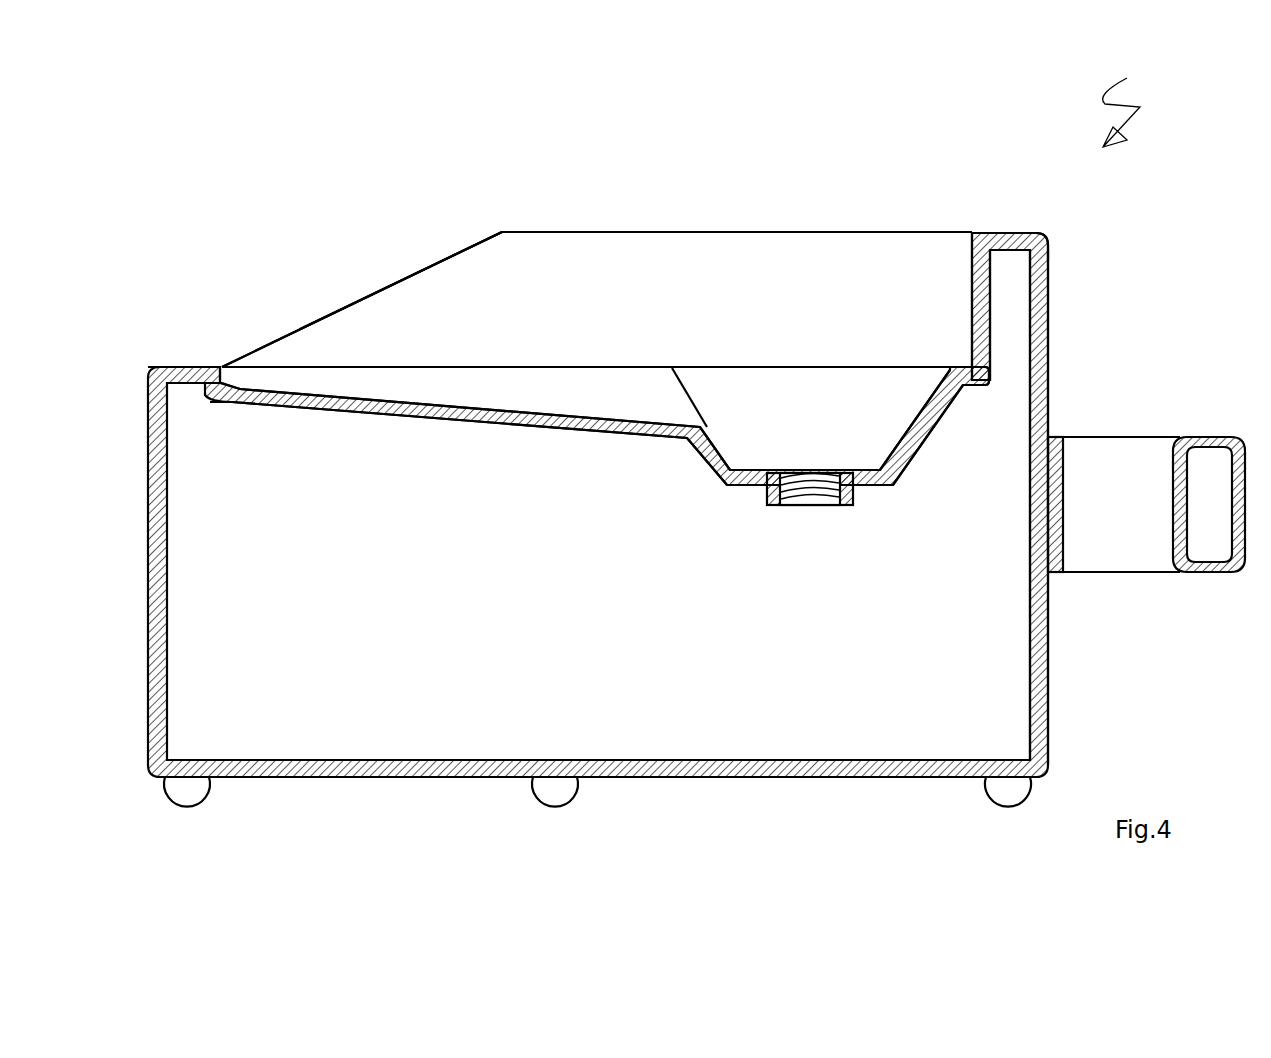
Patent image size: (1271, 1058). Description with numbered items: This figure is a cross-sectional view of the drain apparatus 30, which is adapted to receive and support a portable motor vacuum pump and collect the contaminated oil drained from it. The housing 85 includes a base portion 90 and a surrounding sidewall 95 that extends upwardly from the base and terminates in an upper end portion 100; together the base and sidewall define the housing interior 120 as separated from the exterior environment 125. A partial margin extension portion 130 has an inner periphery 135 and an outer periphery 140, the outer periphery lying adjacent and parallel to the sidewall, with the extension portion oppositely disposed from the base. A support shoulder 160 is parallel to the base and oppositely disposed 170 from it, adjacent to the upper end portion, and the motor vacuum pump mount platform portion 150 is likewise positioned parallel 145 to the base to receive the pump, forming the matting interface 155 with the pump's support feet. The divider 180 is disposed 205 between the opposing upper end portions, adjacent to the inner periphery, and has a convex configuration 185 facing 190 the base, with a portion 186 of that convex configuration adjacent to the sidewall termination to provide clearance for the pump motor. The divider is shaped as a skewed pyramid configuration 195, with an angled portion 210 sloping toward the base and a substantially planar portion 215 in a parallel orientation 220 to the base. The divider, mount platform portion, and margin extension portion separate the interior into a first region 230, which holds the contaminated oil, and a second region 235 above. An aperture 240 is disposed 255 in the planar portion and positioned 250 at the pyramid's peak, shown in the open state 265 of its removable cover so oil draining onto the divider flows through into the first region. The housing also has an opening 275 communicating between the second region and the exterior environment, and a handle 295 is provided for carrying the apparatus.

The drain apparatus 30 is at (1129, 100).
The housing 85 is at (1048, 310).
The base portion 90 is at (842, 777).
The surrounding sidewall 95 is at (1048, 400).
The upper end portion 100 is at (148, 387).
The interior 120 is at (650, 400).
The exterior environment 125 is at (1233, 144).
The partial margin extension portion 130 is at (737, 190).
The inner periphery 135 is at (395, 307).
The outer periphery 140 is at (1048, 268).
The oppositely disposed parallel position 145 is at (598, 496).
The motor vacuum pump mount platform portion 150 is at (967, 367).
The matting interface 155 is at (810, 367).
The support shoulder 160 is at (605, 230).
The oppositely disposed parallel position 170 is at (660, 233).
The divider 180 is at (313, 387).
The convex configuration 185 is at (438, 417).
The portion of convex configuration 186 is at (584, 266).
The facing base portion 190 is at (295, 760).
The skewed pyramid configuration 195 is at (555, 427).
The divider disposed between opposing upper end portions 205 is at (155, 367).
The angled portion 210 is at (347, 410).
The substantially planar portion 215 is at (757, 472).
The parallel orientation of planar portion 220 is at (873, 485).
The first region 230 is at (490, 668).
The second region 235 is at (830, 403).
The aperture 240 is at (807, 487).
The aperture positioned at the peak of the pyramid 250 is at (780, 505).
The aperture disposed in the planar portion 255 is at (896, 306).
The open state of cover 265 is at (857, 368).
The opening of housing 275 is at (522, 258).
The handle 295 is at (1163, 436).